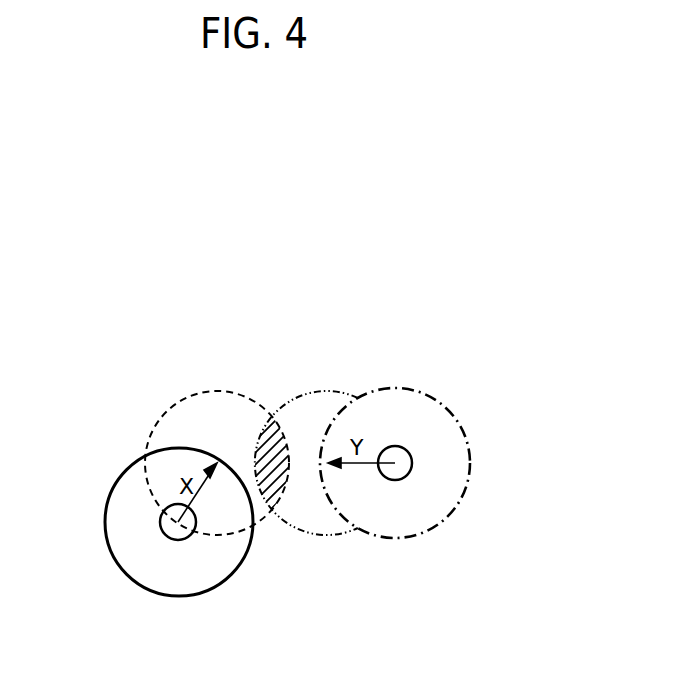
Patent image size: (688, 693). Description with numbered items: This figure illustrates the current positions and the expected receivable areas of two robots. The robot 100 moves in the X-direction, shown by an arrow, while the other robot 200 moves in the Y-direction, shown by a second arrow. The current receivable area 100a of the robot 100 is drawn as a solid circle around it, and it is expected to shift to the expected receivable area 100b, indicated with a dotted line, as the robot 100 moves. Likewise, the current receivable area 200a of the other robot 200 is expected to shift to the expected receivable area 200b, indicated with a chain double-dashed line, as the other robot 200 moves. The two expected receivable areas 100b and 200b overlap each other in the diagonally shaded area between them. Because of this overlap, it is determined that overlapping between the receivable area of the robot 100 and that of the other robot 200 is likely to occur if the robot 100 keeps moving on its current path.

The robot 100 is at (163, 533).
The current receivable area 100a is at (127, 475).
The expected receivable area 100b is at (187, 396).
The other robot 200 is at (398, 447).
The current receivable area 200a is at (468, 443).
The expected receivable area 200b is at (312, 392).